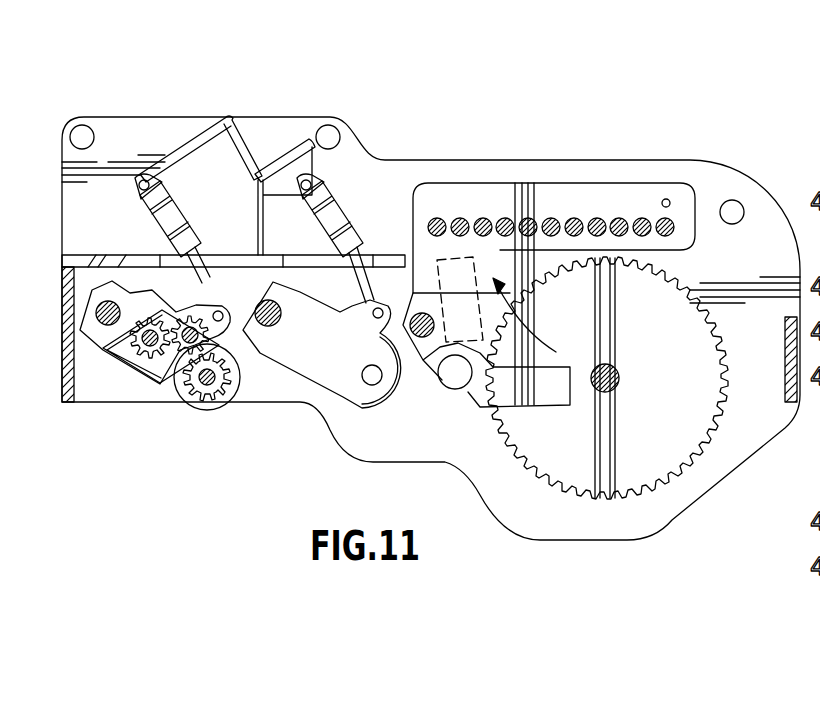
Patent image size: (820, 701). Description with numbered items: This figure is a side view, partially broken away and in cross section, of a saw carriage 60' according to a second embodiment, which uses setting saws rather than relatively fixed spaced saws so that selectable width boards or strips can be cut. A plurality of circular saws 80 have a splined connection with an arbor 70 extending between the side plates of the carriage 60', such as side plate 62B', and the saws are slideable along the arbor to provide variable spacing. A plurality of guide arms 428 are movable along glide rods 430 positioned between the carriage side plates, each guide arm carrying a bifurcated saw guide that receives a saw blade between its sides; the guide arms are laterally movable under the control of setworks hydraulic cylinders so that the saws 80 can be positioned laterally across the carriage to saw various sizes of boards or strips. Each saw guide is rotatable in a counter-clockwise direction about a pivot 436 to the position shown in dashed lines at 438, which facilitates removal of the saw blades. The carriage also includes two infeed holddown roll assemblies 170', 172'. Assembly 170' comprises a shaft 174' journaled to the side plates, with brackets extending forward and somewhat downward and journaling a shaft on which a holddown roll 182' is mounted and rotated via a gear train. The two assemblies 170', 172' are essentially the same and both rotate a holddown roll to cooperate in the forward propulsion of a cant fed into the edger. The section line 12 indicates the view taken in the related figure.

The side plate 62B' is at (227, 147).
The saw carriage 60' is at (431, 285).
The section line 12 is at (400, 145).
The guide arm 428 is at (566, 188).
The glide rods 430 is at (623, 219).
The dashed-line position of saw guide 438 is at (440, 257).
The shaft 174' is at (99, 263).
The arbor 70 is at (612, 366).
The infeed holddown roll assembly 170' is at (155, 376).
The holddown roll 182' is at (208, 417).
The infeed holddown roll assembly 172' is at (322, 389).
The pivot 436 is at (456, 390).
The circular saw 80 is at (570, 482).